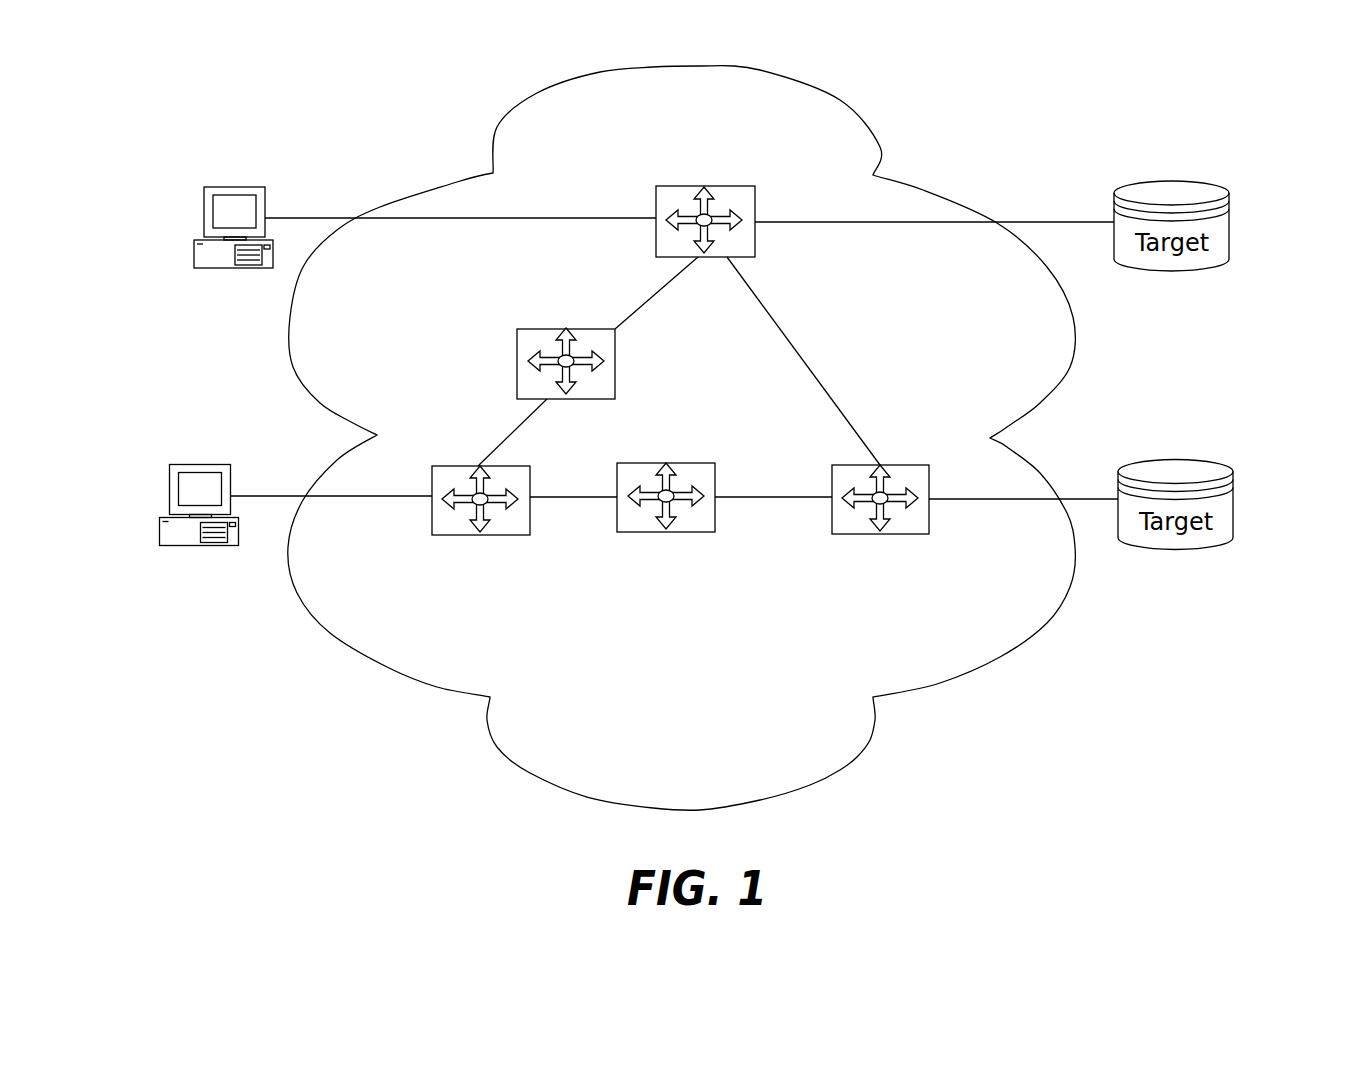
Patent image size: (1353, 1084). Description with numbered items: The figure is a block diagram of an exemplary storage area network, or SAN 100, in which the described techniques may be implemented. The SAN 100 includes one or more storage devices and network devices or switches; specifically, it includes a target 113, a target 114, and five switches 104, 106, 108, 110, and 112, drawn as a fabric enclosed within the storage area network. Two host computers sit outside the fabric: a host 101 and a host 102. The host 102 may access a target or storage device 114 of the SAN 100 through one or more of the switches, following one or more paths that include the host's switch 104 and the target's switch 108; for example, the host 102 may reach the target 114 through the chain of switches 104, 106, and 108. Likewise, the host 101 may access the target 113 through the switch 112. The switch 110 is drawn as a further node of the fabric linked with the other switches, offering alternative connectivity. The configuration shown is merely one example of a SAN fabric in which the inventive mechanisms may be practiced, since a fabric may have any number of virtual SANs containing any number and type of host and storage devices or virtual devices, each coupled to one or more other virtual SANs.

The storage area network 100 is at (378, 806).
The host 101 is at (197, 245).
The host 102 is at (160, 521).
The switch 104 is at (452, 536).
The switch 106 is at (639, 529).
The switch 108 is at (935, 465).
The switch 110 is at (530, 363).
The switch 112 is at (740, 186).
The target 113 is at (1230, 228).
The target 114 is at (1234, 507).